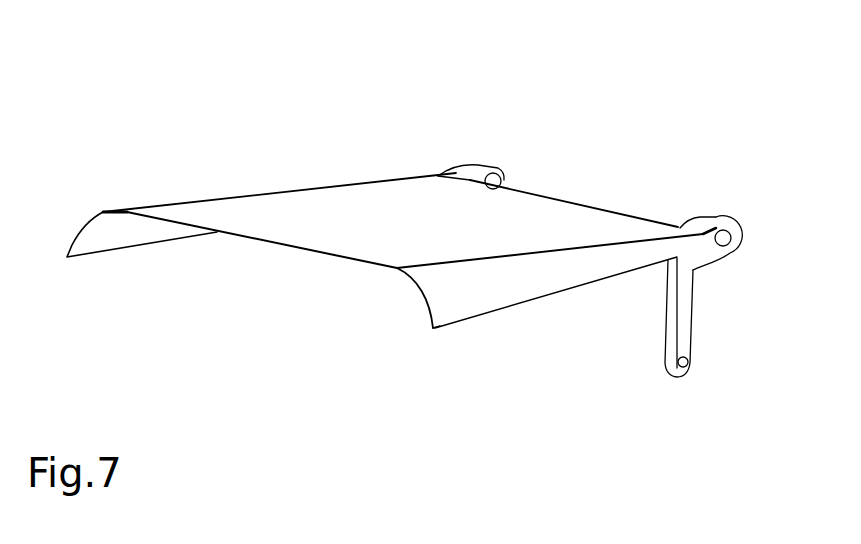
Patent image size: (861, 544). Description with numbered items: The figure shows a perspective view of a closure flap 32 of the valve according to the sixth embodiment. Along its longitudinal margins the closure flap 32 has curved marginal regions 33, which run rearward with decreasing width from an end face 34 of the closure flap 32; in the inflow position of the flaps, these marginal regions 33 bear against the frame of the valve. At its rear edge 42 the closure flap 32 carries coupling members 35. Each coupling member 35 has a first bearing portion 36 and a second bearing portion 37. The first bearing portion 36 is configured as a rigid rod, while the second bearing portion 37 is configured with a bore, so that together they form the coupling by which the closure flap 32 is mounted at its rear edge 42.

The closure flap 32 is at (303, 166).
The marginal regions 33 is at (460, 308).
The end face 34 is at (248, 253).
The coupling members 35 is at (718, 208).
The first bearing portion 36 is at (680, 316).
The second bearing portion 37 is at (722, 224).
The rear edge 42 is at (668, 222).